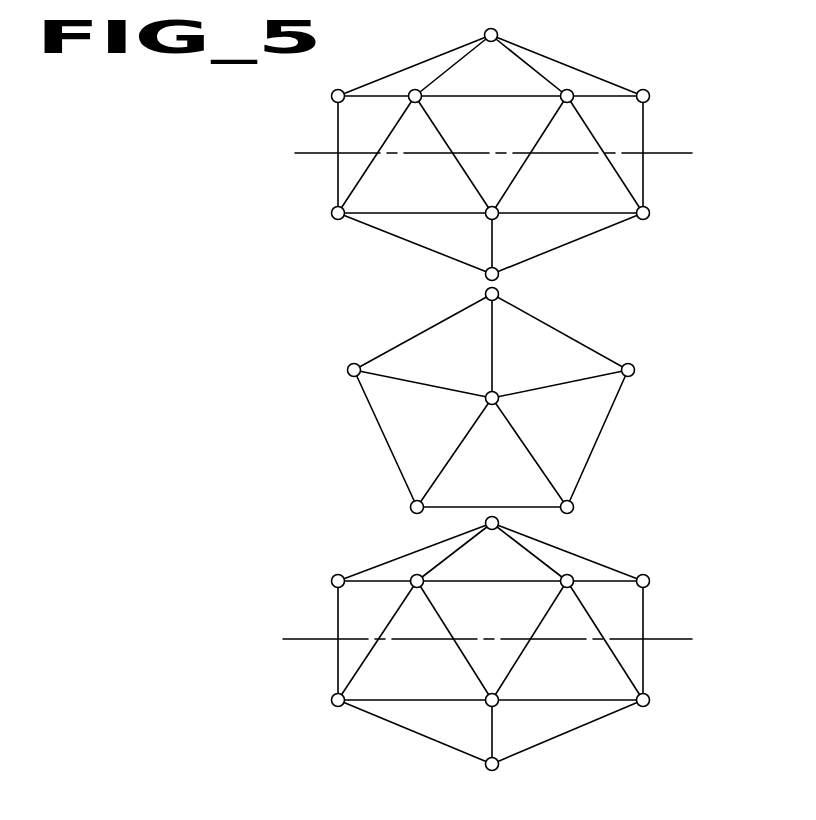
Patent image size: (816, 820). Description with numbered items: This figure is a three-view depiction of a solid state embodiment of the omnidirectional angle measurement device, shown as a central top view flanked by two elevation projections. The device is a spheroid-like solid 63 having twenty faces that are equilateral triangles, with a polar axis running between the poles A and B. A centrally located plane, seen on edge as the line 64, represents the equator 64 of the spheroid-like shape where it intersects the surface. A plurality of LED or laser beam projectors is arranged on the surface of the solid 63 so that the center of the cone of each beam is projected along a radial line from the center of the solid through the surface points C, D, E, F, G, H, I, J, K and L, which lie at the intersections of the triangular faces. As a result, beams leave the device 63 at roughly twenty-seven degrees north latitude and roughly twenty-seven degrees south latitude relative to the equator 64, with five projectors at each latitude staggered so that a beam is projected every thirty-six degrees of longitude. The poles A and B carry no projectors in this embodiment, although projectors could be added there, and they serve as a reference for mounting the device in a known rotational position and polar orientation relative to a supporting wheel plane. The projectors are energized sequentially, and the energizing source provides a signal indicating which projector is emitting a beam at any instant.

The spheroid-like solid 63 is at (643, 133).
The equator 64 is at (297, 153).
The pole A is at (497, 31).
The pole B is at (497, 270).
The surface point C is at (650, 213).
The surface point D is at (570, 575).
The surface point E is at (415, 574).
The surface point F is at (331, 214).
The surface point G is at (499, 211).
The surface point H is at (650, 94).
The surface point I is at (499, 698).
The surface point J is at (331, 96).
The surface point K is at (415, 89).
The surface point L is at (567, 89).